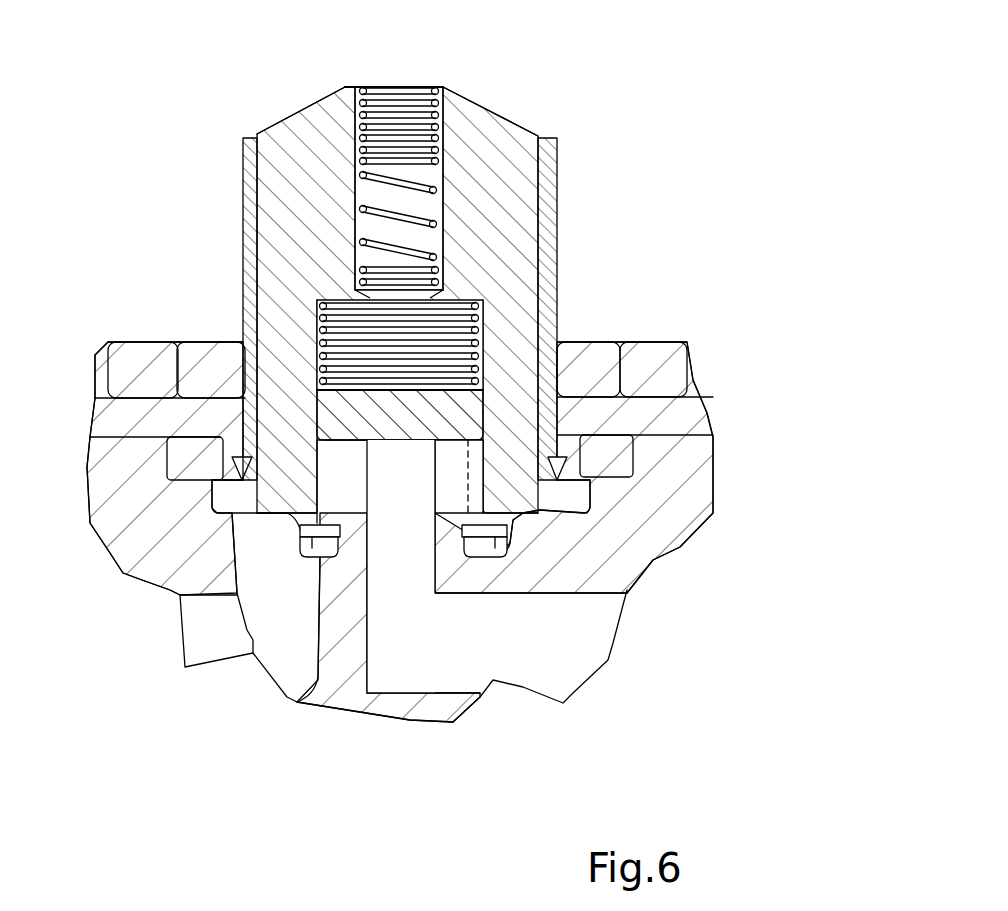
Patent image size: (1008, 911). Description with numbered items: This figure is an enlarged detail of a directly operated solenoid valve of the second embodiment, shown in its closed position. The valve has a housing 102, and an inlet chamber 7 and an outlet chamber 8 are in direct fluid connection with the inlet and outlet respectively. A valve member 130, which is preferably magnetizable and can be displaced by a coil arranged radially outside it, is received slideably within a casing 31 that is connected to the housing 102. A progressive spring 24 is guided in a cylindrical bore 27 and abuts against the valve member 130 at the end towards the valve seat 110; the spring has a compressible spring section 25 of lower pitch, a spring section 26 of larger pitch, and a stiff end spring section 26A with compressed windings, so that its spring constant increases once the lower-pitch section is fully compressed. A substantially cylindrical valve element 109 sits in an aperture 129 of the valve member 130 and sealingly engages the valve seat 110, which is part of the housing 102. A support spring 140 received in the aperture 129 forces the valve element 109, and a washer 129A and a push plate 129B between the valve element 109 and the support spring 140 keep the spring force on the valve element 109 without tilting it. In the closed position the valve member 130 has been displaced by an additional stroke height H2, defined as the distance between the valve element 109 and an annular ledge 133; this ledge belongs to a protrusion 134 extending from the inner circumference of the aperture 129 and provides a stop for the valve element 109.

The inlet chamber 7 is at (293, 647).
The outlet chamber 8 is at (398, 553).
The progressive spring 24 is at (402, 185).
The spring section 25 is at (337, 90).
The spring section 26 is at (437, 177).
The spring section 26A is at (348, 263).
The cylindrical bore 27 is at (437, 172).
The casing 31 is at (547, 172).
The housing 102 is at (605, 552).
The valve element 109 is at (320, 410).
The valve seat 110 is at (440, 415).
The aperture 129 is at (485, 390).
The washer 129A is at (320, 400).
The push plate 129B is at (315, 371).
The valve member 130 is at (507, 167).
The annular ledge 133 is at (243, 467).
The protrusion 134 is at (560, 388).
The support spring 140 is at (473, 300).
The stroke height H2 is at (470, 440).